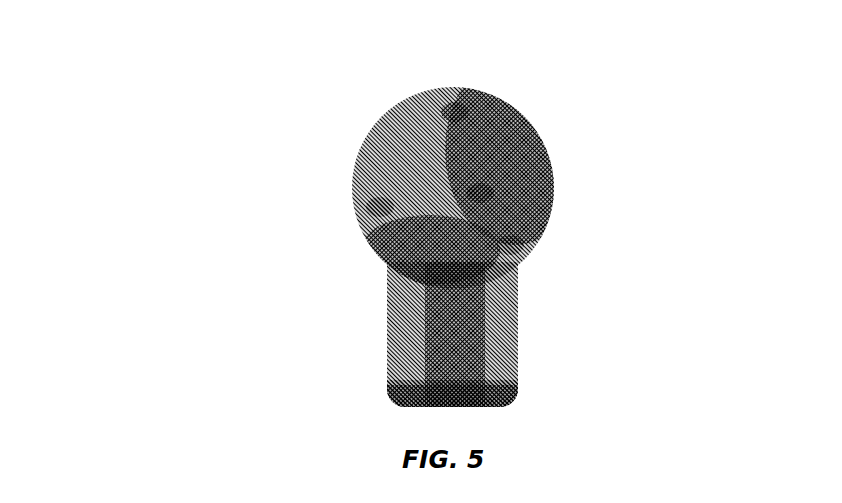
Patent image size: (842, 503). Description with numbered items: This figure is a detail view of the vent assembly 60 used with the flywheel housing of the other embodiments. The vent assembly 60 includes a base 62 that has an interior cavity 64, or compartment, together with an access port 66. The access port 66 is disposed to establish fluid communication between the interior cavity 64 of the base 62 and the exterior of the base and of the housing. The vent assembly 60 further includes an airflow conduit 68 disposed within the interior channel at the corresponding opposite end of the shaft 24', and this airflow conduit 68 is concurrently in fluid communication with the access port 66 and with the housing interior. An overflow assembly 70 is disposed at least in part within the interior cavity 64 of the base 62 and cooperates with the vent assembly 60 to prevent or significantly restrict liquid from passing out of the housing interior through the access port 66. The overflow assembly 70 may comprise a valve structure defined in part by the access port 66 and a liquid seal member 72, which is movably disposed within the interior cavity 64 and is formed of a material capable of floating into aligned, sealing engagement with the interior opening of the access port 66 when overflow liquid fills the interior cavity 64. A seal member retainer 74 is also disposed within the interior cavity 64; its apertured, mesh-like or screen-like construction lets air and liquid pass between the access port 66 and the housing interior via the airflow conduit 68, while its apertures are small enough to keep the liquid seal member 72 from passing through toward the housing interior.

The vent assembly 60 is at (140, 198).
The base 62 is at (386, 141).
The interior cavity 64 is at (383, 207).
The access port 66 is at (456, 116).
The airflow conduit 68 is at (406, 385).
The overflow assembly 70 is at (676, 139).
The liquid seal member 72 is at (472, 193).
The seal member retainer 74 is at (503, 245).
The shaft 24' is at (407, 337).